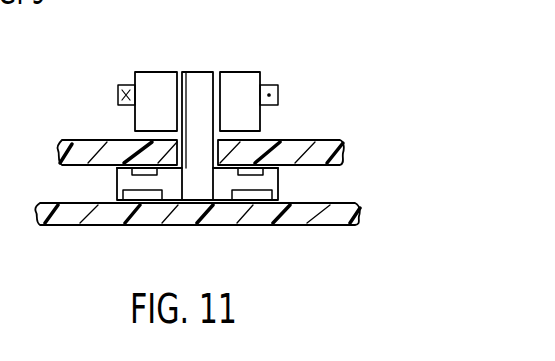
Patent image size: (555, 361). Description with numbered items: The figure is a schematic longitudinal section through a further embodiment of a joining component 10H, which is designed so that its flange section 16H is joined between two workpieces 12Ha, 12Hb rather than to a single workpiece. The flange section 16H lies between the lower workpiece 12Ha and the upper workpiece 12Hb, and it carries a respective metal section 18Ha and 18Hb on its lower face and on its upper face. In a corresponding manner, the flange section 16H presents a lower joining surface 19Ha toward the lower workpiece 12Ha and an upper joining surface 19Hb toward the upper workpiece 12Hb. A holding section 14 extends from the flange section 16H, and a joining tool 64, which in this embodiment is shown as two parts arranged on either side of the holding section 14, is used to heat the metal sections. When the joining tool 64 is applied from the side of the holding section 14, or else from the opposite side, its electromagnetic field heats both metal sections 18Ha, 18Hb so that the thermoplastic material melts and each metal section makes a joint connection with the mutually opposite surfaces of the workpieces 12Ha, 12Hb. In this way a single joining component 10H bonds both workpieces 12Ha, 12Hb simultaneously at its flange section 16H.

The joining tool 64 is at (144, 64).
The holding section 14 is at (184, 73).
The joining component 10H is at (203, 60).
The workpiece 12Hb is at (337, 150).
The workpiece 12Ha is at (350, 210).
The upper joining surface 19Hb is at (118, 153).
The lower joining surface 19Ha is at (181, 212).
The metal section 18Hb is at (135, 172).
The metal section 18Ha is at (133, 197).
The flange section 16H is at (195, 192).